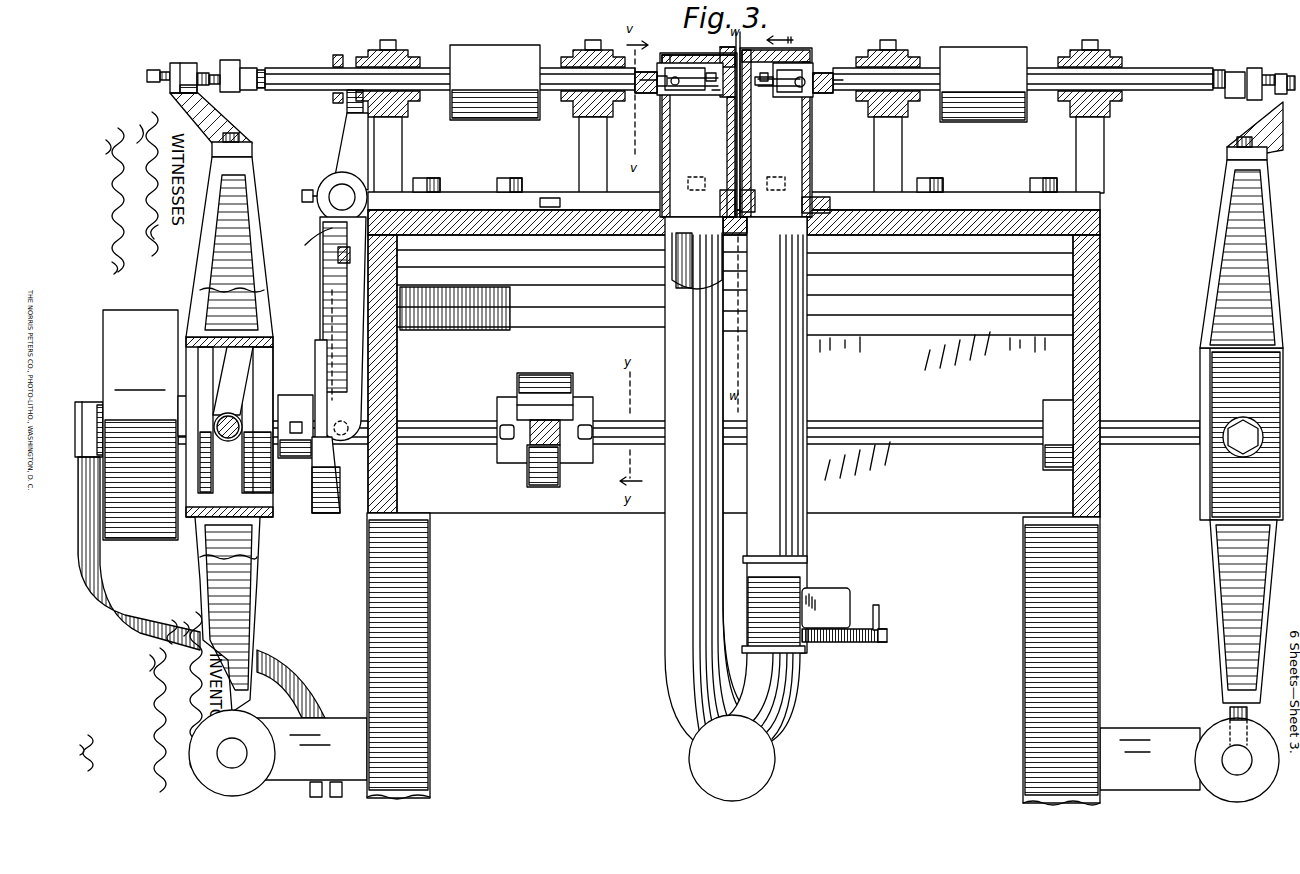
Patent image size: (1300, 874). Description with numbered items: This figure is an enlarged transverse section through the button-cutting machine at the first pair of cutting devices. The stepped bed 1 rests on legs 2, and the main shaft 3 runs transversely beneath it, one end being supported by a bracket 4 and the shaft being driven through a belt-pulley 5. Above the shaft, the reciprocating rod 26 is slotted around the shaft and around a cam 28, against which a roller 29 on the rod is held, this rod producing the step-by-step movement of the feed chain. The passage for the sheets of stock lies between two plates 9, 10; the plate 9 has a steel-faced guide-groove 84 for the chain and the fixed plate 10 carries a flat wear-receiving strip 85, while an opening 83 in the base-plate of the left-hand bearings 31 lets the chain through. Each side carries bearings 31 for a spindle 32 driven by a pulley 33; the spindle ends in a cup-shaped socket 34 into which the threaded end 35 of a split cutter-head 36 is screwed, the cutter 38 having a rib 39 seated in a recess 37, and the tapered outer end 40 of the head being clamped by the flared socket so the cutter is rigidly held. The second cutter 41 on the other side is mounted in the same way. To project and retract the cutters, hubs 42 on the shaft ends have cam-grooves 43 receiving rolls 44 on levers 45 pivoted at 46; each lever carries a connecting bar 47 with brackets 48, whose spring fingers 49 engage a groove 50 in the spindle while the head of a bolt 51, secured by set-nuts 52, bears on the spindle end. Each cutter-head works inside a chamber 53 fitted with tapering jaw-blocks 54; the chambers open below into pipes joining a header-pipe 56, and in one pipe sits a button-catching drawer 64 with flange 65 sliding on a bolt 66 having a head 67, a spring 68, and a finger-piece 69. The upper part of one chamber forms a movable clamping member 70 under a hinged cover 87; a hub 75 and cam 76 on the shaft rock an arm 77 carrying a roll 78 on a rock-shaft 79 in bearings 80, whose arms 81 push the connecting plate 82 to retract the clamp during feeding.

The bed 1 is at (570, 523).
The legs 2 is at (432, 619).
The main shaft 3 is at (872, 423).
The bracket 4 is at (298, 680).
The belt-pulley 5 is at (131, 425).
The plate 9 is at (712, 143).
The plate 10 is at (755, 159).
The reciprocating rod 26 is at (515, 456).
The cam 28 is at (560, 472).
The roller 29 is at (545, 409).
The bearings 31 is at (428, 135).
The spindle 32 is at (313, 62).
The pulley 33 is at (738, 83).
The cup-shaped socket 34 is at (670, 54).
The threaded end 35 is at (657, 92).
The cutter-head 36 is at (695, 96).
The recess 37 is at (818, 97).
The cutter 38 is at (772, 88).
The rib 39 is at (858, 50).
The tapered outer end 40 is at (740, 71).
The second cutter 41 is at (715, 96).
The hub 42 is at (272, 368).
The cam-groove 43 is at (240, 395).
The roll 44 is at (243, 429).
The lever 45 is at (256, 575).
The pivot 46 is at (1214, 718).
The connecting bar 47 is at (254, 150).
The bracket 48 is at (222, 120).
The adjustable finger 49 is at (233, 62).
The groove 50 is at (264, 69).
The bolt 51 is at (150, 71).
The set-nuts 52 is at (184, 94).
The chamber 53 is at (666, 171).
The jaw-blocks 54 is at (723, 46).
The header-pipe 56 is at (732, 758).
The drawer 64 is at (826, 608).
The flange 65 is at (876, 646).
The bolt 66 is at (888, 636).
The head 67 is at (884, 629).
The spring 68 is at (840, 644).
The finger-piece 69 is at (880, 607).
The movable clamping member 70 is at (700, 53).
The hub 75 is at (320, 514).
The cam 76 is at (338, 488).
The arm 77 is at (340, 328).
The roll 78 is at (318, 456).
The rock-shaft 79 is at (334, 197).
The bearings 80 is at (307, 241).
The arms 81 is at (347, 146).
The bar or plate 82 is at (340, 55).
The opening 83 is at (560, 203).
The guide-groove 84 is at (712, 217).
The wear-receiving strip 85 is at (758, 207).
The hinged cover 87 is at (682, 56).